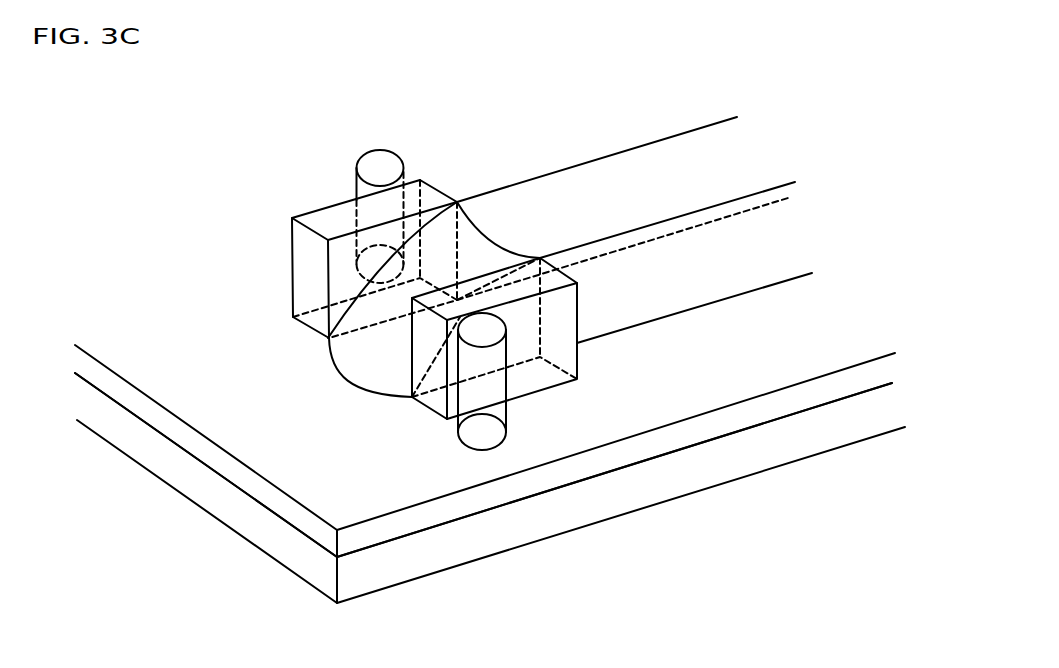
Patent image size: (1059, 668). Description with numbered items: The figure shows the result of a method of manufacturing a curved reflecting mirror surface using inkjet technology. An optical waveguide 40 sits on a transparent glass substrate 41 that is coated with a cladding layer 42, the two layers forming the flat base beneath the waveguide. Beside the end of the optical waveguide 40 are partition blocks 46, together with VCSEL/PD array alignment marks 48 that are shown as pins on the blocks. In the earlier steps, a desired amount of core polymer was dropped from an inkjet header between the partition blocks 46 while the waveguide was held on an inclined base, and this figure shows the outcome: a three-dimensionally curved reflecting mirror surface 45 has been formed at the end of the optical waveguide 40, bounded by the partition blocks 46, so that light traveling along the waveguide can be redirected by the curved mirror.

The optical waveguide 40 is at (723, 155).
The transparent glass substrate 41 is at (243, 513).
The cladding layer 42 is at (172, 428).
The curved reflecting mirror surface 45 is at (368, 358).
The partition block 46 is at (307, 273).
The VCSEL/PD array alignment mark 48 is at (363, 158).